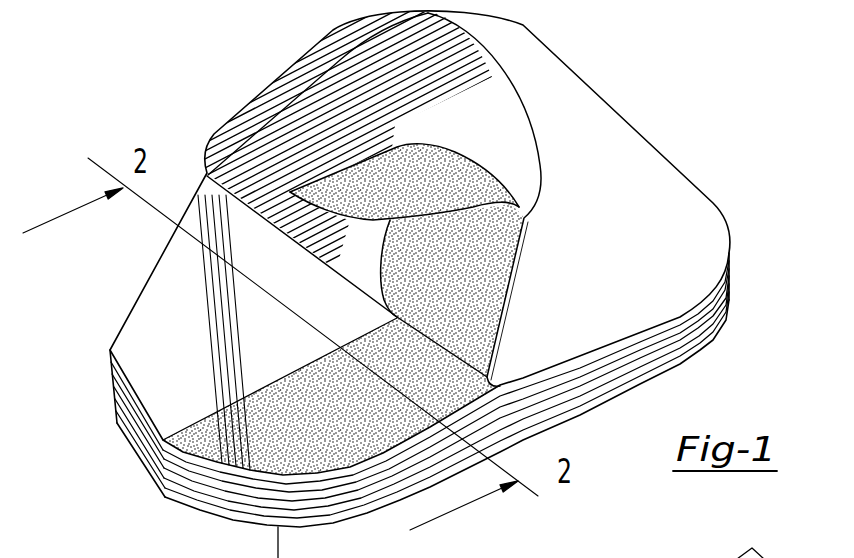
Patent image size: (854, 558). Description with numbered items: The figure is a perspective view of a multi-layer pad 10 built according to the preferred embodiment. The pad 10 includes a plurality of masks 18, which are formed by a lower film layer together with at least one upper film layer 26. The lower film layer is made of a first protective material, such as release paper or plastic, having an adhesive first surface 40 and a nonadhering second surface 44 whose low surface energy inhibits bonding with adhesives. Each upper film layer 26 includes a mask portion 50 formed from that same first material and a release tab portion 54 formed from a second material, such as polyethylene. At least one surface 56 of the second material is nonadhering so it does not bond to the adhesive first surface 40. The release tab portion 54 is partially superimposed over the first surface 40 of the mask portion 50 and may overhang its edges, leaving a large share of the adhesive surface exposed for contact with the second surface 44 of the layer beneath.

The multi-layer pad 10 is at (702, 364).
The masks 18 is at (732, 328).
The upper film layer 26 is at (640, 222).
The first surface 40 is at (483, 138).
The second surface 44 is at (593, 151).
The mask portion 50 is at (517, 185).
The release tab portion 54 is at (483, 311).
The surface 56 is at (436, 187).